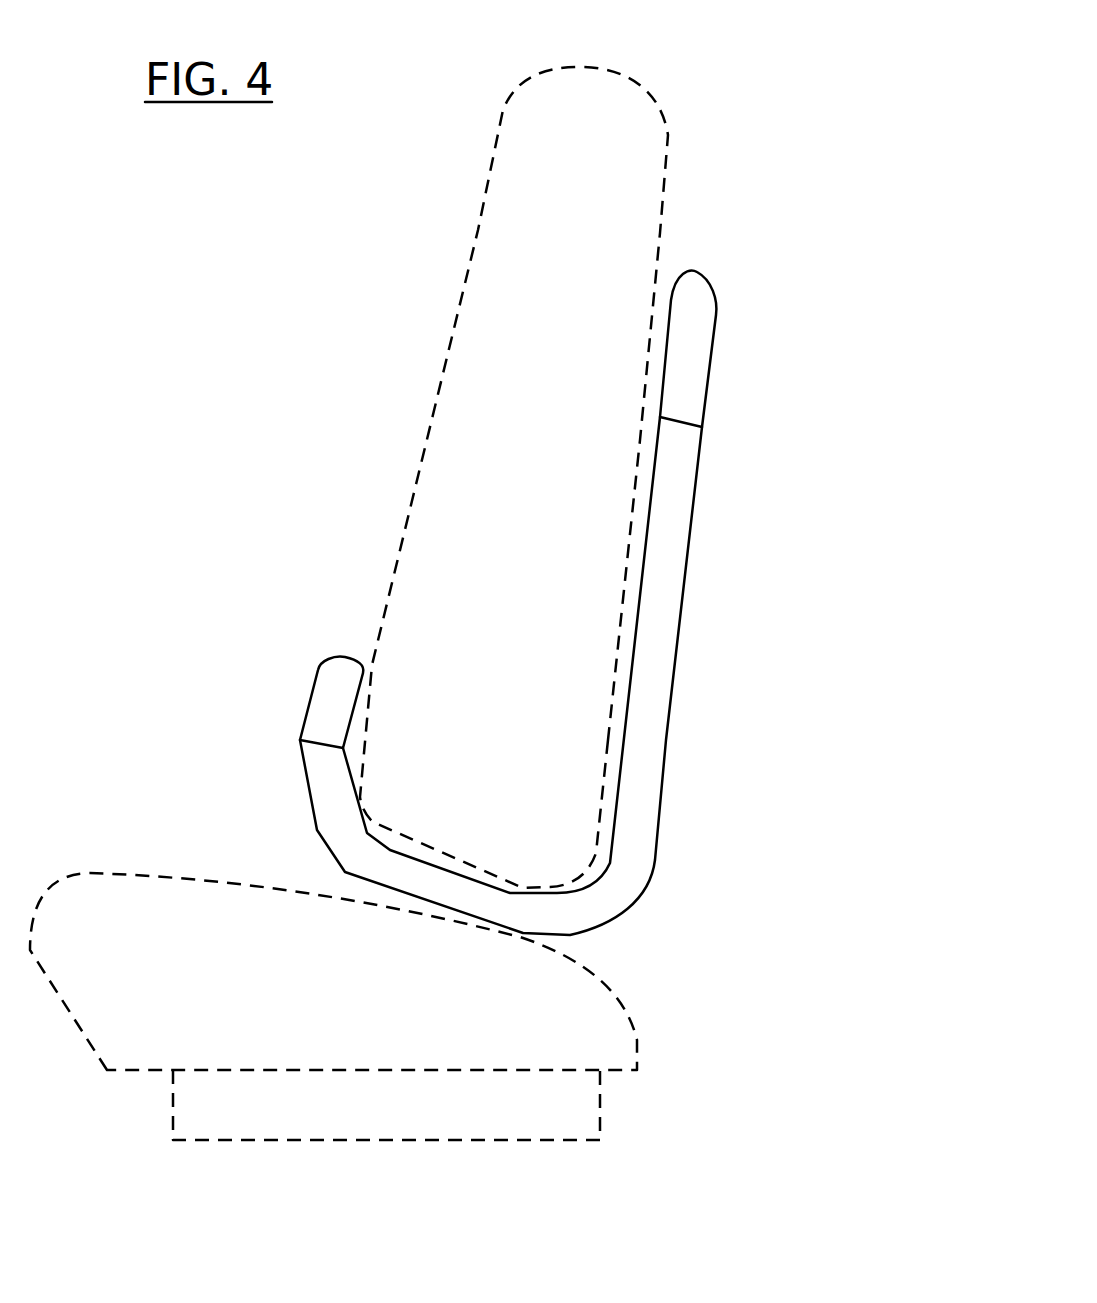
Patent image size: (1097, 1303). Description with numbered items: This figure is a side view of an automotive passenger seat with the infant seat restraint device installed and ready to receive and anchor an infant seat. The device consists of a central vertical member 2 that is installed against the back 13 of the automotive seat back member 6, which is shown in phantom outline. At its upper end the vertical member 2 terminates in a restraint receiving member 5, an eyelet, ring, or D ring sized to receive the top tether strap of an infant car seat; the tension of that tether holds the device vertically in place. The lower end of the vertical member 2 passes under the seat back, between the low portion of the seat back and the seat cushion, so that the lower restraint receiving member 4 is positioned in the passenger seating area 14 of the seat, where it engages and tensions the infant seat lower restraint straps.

The central vertical member 2 is at (705, 646).
The restraint receiving member 4 is at (330, 709).
The restraint receiving member 5 is at (692, 327).
The automotive seat back member 6 is at (612, 110).
The back 13 is at (624, 444).
The passenger seating area 14 is at (202, 922).